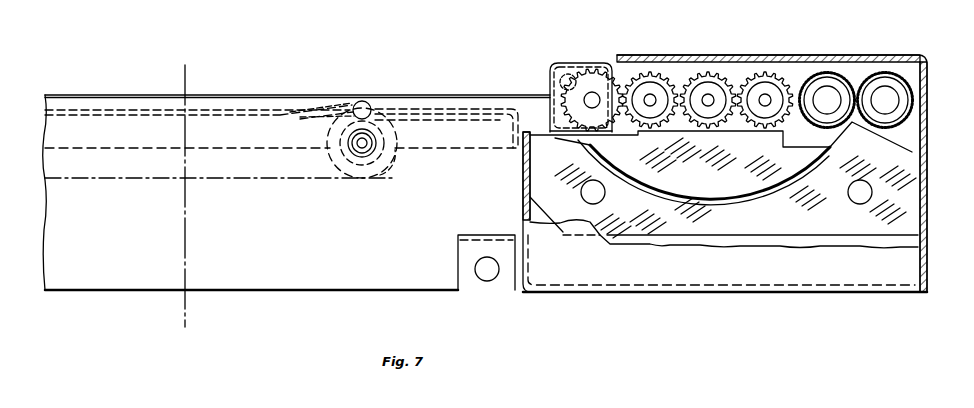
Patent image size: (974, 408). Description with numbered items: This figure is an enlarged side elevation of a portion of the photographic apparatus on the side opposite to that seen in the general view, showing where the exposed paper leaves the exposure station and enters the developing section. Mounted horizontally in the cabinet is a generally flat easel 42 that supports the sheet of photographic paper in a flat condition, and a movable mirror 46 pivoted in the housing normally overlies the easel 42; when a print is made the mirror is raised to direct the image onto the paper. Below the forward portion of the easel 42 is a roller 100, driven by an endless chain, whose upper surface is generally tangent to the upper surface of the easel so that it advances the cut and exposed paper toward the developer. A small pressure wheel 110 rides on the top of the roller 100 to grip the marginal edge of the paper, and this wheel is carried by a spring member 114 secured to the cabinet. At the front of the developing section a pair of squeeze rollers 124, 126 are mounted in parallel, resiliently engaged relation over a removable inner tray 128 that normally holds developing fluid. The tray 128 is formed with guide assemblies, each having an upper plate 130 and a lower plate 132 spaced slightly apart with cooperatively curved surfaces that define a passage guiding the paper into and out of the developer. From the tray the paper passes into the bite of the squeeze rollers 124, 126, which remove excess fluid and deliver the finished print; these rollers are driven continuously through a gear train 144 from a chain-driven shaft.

The movable mirror 46 is at (481, 95).
The easel 42 is at (447, 120).
The spring member 114 is at (350, 103).
The pressure wheel 110 is at (370, 101).
The roller 100 is at (376, 179).
The gear train 144 is at (737, 70).
The squeeze roller 124 is at (811, 75).
The squeeze roller 126 is at (917, 121).
The removable inner tray 128 is at (916, 152).
The upper plate 130 is at (718, 179).
The lower plate 132 is at (718, 226).